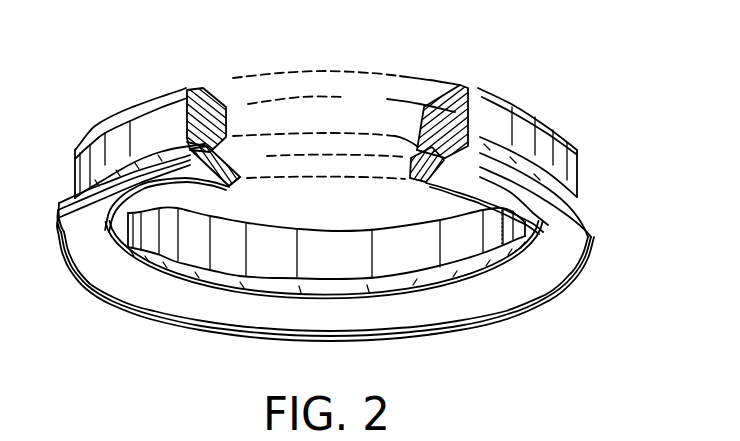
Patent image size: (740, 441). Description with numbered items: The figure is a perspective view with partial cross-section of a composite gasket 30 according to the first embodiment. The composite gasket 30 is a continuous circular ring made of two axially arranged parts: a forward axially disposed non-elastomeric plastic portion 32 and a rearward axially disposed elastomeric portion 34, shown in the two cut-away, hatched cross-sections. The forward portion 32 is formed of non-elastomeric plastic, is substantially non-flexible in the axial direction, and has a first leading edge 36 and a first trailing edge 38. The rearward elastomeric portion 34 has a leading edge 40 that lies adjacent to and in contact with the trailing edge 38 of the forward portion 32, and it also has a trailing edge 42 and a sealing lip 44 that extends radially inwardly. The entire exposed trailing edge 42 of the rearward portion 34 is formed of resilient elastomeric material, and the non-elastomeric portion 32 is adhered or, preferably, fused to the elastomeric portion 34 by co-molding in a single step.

The composite gasket 30 is at (549, 109).
The forward axially disposed non-elastomeric plastic portion 32 is at (226, 108).
The rearward axially disposed elastomeric portion 34 is at (246, 180).
The first leading edge 36 is at (424, 105).
The first trailing edge 38 is at (468, 110).
The leading edge 40 is at (190, 143).
The trailing edge 42 is at (222, 175).
The sealing lip 44 is at (412, 170).